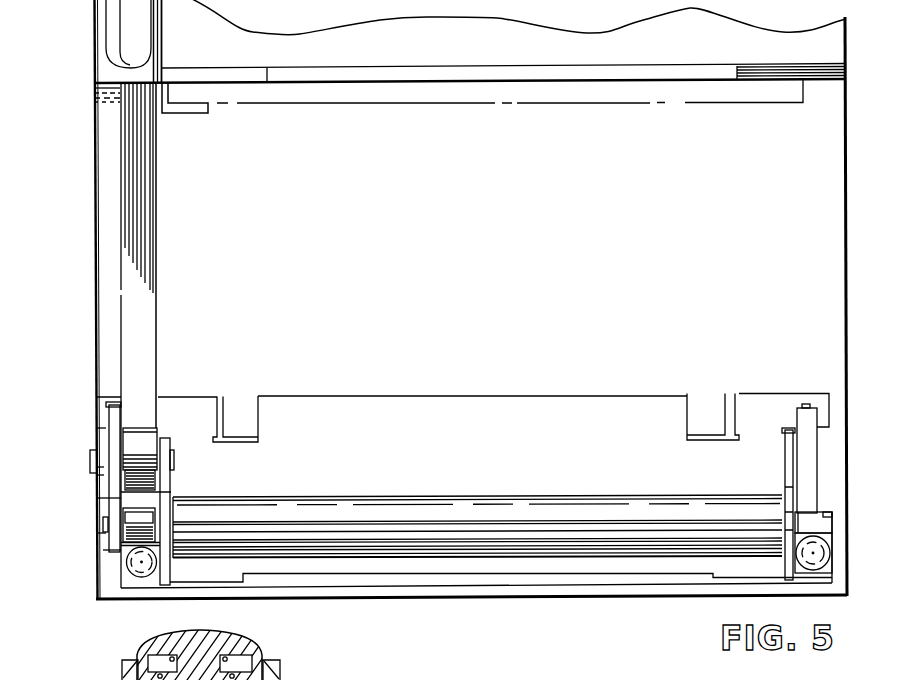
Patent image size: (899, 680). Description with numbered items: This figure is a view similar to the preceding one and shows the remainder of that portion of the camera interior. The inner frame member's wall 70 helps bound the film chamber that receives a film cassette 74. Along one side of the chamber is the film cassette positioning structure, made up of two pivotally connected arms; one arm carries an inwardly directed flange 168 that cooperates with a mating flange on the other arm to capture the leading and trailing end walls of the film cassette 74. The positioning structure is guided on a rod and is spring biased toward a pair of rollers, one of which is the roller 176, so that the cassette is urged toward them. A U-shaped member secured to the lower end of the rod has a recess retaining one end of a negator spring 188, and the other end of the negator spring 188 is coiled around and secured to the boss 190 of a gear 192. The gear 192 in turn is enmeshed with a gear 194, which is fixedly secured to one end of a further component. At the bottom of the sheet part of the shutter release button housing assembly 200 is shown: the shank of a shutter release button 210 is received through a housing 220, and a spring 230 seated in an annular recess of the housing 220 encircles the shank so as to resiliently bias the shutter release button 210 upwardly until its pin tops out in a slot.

The wall 70 is at (485, 54).
The film cassette 74 is at (505, 127).
The inwardly directed flange 168 is at (190, 117).
The roller 176 is at (617, 525).
The negator spring 188 is at (137, 207).
The boss 190 is at (137, 445).
The gear 192 is at (114, 483).
The gear 194 is at (114, 532).
The bearing assembly 200 is at (194, 646).
The shutter release button 210 is at (165, 637).
The housing 220 is at (115, 678).
The spring 230 is at (125, 673).